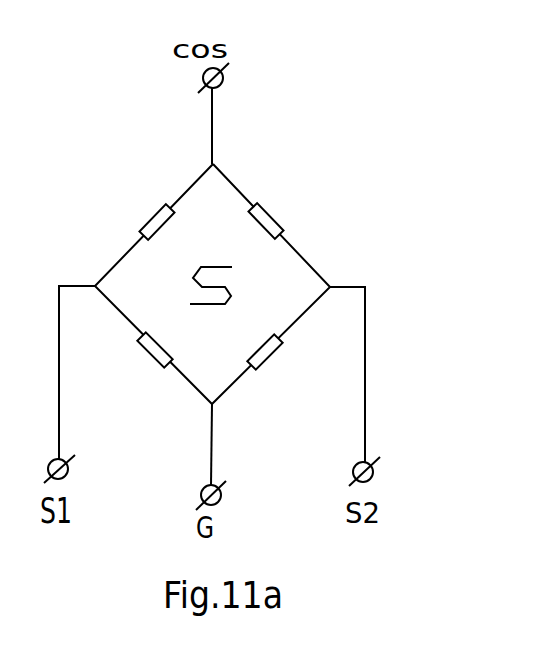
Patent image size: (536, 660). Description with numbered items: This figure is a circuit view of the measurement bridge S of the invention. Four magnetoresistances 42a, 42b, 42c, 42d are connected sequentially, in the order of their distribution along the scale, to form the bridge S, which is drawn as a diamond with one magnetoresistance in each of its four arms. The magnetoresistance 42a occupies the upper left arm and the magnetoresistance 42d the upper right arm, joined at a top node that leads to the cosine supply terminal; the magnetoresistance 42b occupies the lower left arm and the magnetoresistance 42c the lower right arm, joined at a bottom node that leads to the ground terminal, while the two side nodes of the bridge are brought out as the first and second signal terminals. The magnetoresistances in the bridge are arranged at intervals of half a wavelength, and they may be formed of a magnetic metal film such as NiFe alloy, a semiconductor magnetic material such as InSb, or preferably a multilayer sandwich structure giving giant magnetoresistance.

The magnetoresistance 42a is at (152, 219).
The magnetoresistance 42b is at (154, 351).
The magnetoresistance 42c is at (267, 353).
The magnetoresistance 42d is at (269, 221).